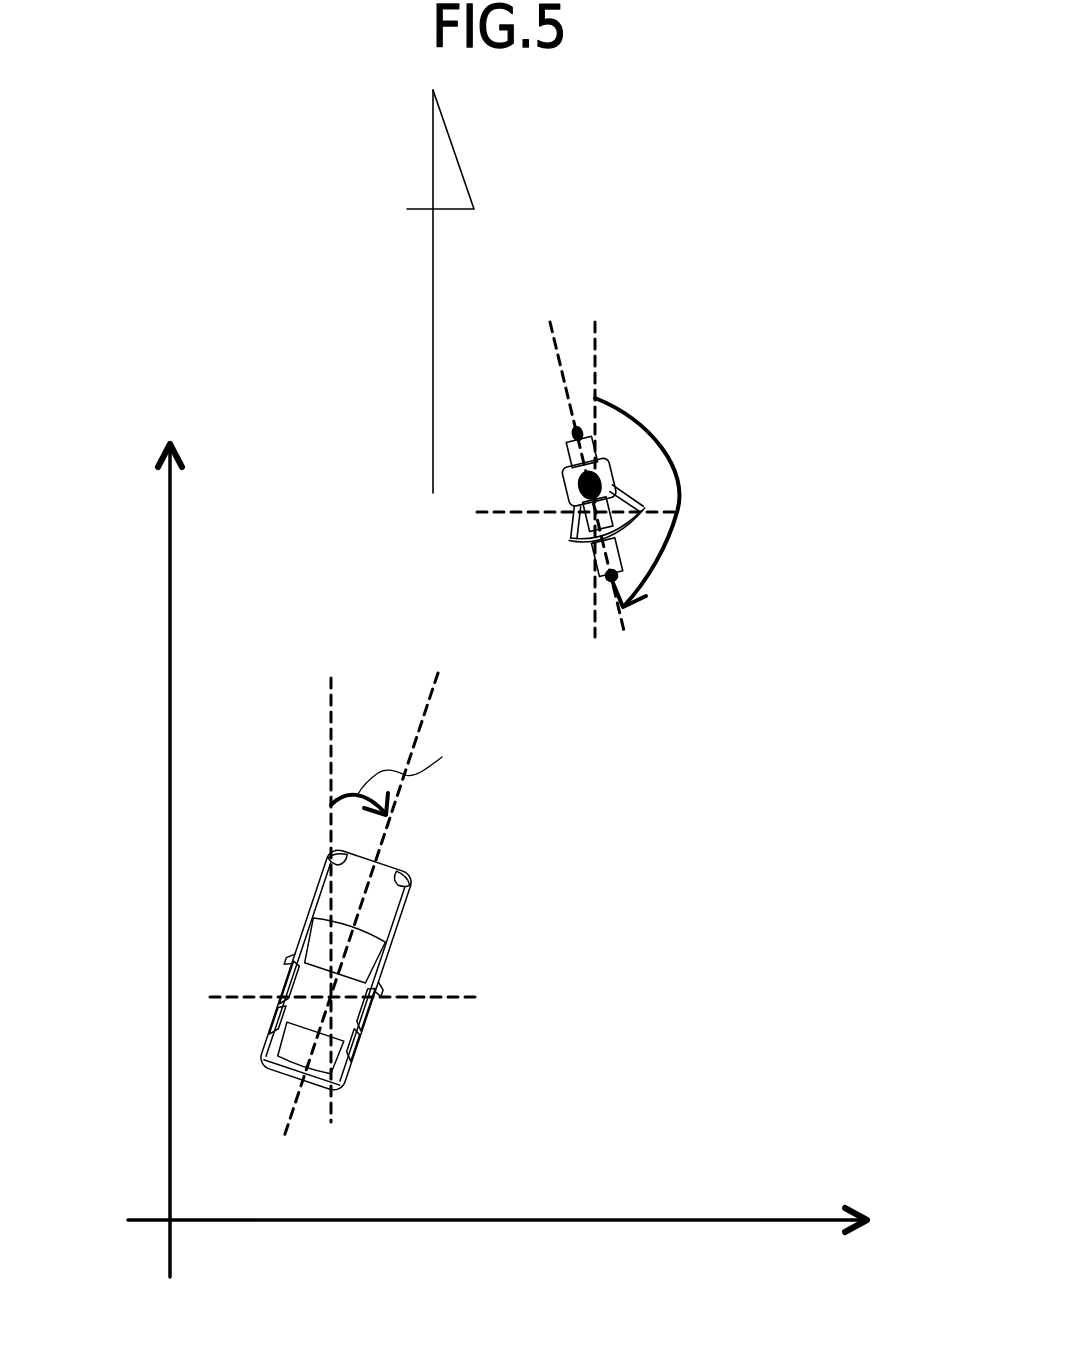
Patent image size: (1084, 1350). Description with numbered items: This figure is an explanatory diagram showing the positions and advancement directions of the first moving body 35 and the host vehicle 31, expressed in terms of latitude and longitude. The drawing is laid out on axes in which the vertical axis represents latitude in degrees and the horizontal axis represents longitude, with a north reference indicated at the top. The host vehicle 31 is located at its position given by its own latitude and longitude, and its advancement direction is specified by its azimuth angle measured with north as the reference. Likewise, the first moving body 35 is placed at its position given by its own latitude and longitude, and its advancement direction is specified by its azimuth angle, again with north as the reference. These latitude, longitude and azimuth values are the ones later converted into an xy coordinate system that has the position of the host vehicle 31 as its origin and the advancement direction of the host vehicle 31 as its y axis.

The host vehicle 31 is at (310, 926).
The first moving body 35 is at (567, 443).
The element latitude is at (238, 423).